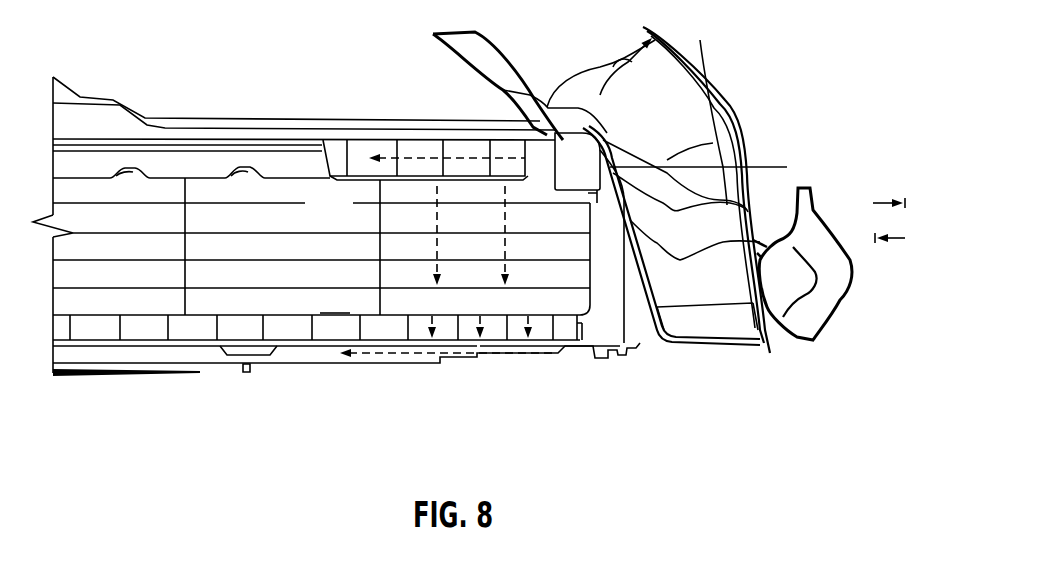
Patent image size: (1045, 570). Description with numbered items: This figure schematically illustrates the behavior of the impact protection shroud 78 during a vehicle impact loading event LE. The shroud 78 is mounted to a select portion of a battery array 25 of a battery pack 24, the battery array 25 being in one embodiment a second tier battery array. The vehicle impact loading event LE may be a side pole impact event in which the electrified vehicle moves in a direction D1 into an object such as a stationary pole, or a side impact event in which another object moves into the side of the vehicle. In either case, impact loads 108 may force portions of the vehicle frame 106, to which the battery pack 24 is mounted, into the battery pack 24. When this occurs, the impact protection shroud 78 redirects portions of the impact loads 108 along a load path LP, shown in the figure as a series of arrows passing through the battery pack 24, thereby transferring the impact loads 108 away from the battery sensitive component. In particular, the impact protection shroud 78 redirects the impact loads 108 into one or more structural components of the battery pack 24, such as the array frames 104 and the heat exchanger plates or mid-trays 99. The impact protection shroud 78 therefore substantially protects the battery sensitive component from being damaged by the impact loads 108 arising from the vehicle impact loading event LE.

The battery pack 24 is at (195, 158).
The battery array 25 is at (268, 208).
The array frames 104 is at (497, 147).
The impact protection shroud 78 is at (573, 150).
The vehicle frame 106 is at (683, 106).
The impact loads 108 is at (750, 167).
The heat exchanger plates/mid-trays 99 is at (347, 363).
The load path LP is at (494, 224).
The direction D1 is at (883, 203).
The vehicle impact loading event LE is at (790, 78).